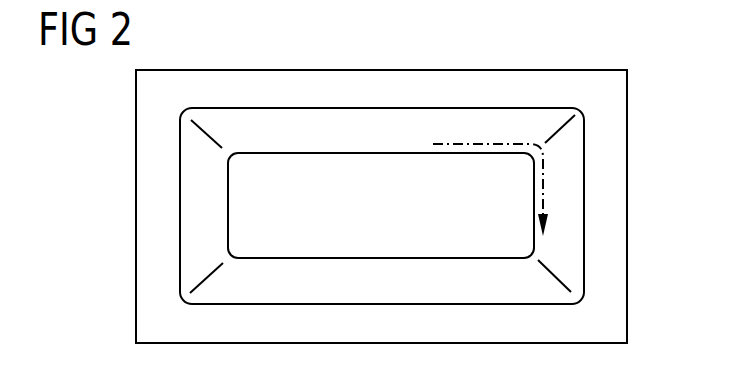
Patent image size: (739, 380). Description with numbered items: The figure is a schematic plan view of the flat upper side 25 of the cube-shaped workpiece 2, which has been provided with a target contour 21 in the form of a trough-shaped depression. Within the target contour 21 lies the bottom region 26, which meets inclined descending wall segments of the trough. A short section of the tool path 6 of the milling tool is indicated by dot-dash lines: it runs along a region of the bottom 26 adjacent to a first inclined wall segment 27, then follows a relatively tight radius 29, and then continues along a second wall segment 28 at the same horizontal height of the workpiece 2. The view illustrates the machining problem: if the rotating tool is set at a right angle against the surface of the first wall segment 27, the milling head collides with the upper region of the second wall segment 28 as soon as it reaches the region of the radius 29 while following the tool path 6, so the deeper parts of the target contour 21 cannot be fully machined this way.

The workpiece 2 is at (121, 226).
The flat upper side 25 is at (155, 153).
The target contour 21 is at (408, 170).
The first inclined wall segment 27 is at (343, 132).
The bottom region 26 is at (402, 215).
The radius 29 is at (575, 114).
The second wall segment 28 is at (568, 198).
The tool path 6 is at (490, 144).